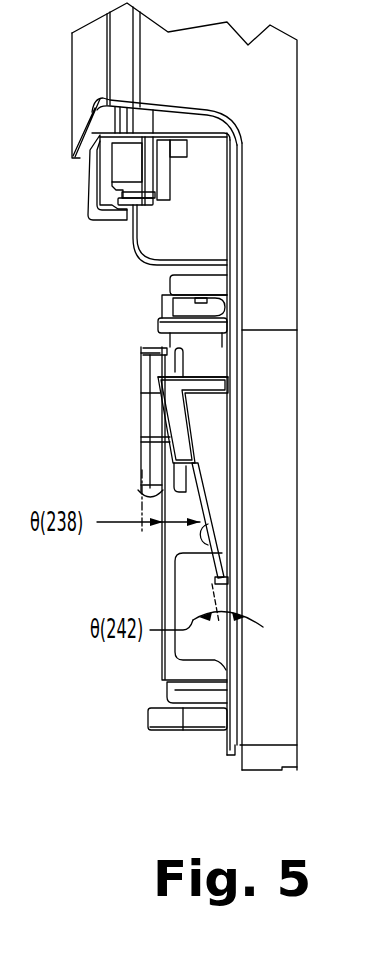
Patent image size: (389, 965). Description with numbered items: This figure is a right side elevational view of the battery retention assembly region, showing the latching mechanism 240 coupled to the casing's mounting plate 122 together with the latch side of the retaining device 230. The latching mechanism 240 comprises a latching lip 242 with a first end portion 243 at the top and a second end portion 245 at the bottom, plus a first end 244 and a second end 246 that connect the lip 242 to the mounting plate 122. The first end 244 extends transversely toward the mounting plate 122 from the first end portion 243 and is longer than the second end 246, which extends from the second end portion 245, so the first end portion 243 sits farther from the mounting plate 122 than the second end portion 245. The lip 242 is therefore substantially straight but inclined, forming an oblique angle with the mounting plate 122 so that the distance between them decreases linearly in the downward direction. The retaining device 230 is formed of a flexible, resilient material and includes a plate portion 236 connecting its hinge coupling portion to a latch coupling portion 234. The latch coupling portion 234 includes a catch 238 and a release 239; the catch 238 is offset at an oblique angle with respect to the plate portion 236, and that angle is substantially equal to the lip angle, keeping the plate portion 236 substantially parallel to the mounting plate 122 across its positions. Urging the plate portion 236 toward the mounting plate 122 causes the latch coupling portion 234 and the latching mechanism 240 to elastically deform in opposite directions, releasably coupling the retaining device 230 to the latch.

The mounting plate 122 is at (297, 310).
The latching mechanism 240 is at (322, 366).
The first end portion 243 is at (256, 421).
The second end portion 245 is at (258, 568).
The retaining device 230 is at (100, 378).
The plate portion 236 is at (145, 410).
The latch coupling portion 234 is at (152, 435).
The catch 238 is at (197, 441).
The first end 244 is at (202, 378).
The release 239 is at (168, 477).
The latching lip 242 is at (203, 528).
The second end 246 is at (222, 594).